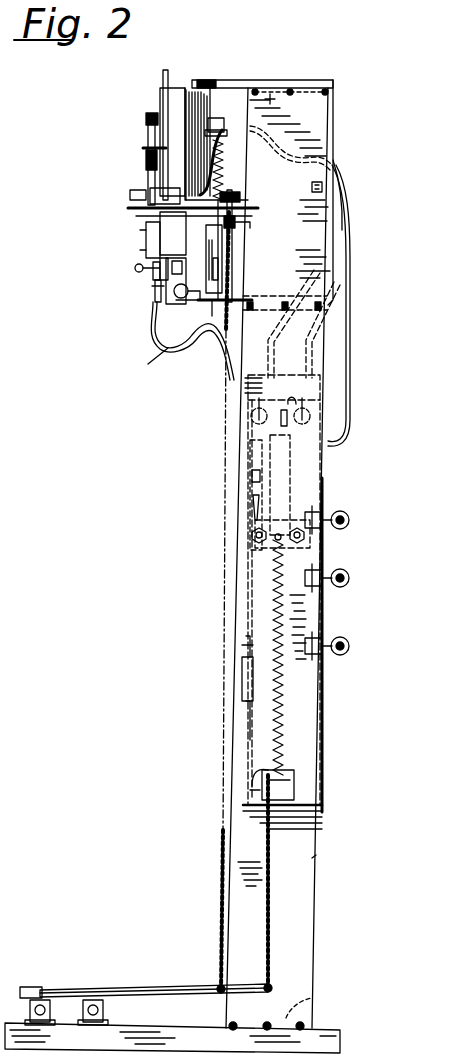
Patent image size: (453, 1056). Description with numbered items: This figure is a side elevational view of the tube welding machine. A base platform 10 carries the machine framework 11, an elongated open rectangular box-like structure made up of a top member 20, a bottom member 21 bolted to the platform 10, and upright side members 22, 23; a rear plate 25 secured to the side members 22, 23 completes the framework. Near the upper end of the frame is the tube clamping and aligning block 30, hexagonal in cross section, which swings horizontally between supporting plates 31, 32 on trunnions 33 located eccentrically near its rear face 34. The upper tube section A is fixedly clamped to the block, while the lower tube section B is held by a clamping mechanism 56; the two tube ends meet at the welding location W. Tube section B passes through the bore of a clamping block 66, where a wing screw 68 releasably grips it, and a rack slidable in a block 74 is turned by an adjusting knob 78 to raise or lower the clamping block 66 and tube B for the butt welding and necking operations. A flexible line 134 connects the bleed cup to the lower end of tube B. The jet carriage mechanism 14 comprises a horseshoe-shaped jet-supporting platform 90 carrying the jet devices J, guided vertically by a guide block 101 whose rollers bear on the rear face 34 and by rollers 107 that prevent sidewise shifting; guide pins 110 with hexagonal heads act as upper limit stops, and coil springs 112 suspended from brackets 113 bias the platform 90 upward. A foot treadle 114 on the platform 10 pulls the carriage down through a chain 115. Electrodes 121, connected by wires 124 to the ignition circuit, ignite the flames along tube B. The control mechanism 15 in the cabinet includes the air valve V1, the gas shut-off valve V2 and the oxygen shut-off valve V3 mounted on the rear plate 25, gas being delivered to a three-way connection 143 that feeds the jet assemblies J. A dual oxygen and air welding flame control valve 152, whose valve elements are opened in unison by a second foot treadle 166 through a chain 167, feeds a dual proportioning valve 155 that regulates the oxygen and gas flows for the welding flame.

The base platform 10 is at (158, 1030).
The machine framework 11 is at (314, 860).
The jet carriage mechanism 14 is at (128, 217).
The control mechanism 15 is at (306, 720).
The top member 20 is at (288, 125).
The bottom member 21 is at (313, 1000).
The upright side member 22 is at (302, 893).
The upright side member 23 is at (328, 118).
The rear plate 25 is at (323, 673).
The tube clamping and aligning block 30 is at (161, 97).
The supporting plate 31 is at (236, 80).
The supporting plate 32 is at (225, 314).
The trunnions 33 is at (205, 80).
The rear face 34 is at (212, 105).
The clamping mechanism 56 is at (146, 240).
The clamping block 66 is at (152, 300).
The wing screw 68 is at (135, 267).
The block 74 is at (172, 304).
The adjusting knob 78 is at (183, 298).
The jet-supporting platform 90 is at (128, 208).
The guide block 101 is at (218, 242).
The rollers 107 is at (218, 268).
The guide pins 110 is at (173, 233).
The coil springs 112 is at (230, 156).
The brackets 113 is at (230, 138).
The foot treadle 114 is at (62, 1000).
The chain 115 is at (220, 888).
The electrodes 121 is at (180, 138).
The wires 124 is at (298, 378).
The flexible line 134 is at (143, 358).
The three-way connection 143 is at (236, 238).
The dual oxygen and air welding flame control valve 152 is at (296, 778).
The dual proportioning valve 155 is at (250, 478).
The foot treadle 166 is at (145, 985).
The chain 167 is at (270, 860).
The upper tube section A is at (162, 76).
The lower tube section B is at (152, 290).
The jet devices J is at (134, 200).
The welding location W is at (165, 190).
The air valve V1 is at (345, 636).
The shut-off valve V2 is at (345, 510).
The shut-off valve V3 is at (345, 568).